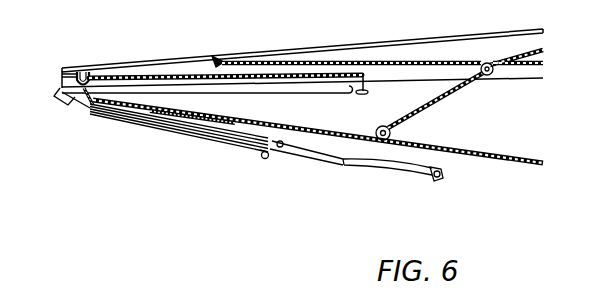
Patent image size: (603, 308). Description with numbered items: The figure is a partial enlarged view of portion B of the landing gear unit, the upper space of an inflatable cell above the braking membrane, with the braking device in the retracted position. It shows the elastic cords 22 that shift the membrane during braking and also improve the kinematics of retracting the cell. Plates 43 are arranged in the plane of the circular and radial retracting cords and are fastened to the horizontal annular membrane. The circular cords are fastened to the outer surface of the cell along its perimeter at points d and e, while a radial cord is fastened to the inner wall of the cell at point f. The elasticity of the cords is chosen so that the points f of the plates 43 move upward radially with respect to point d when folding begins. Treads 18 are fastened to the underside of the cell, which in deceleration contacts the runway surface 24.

The fastening point f is at (87, 112).
The plates 43 is at (160, 126).
The fastening point d is at (263, 159).
The runway surface 24 is at (281, 149).
The treads 18 is at (398, 165).
The fastening point e is at (437, 181).
The elastic cords 22 is at (451, 98).
The upper space B is at (502, 101).